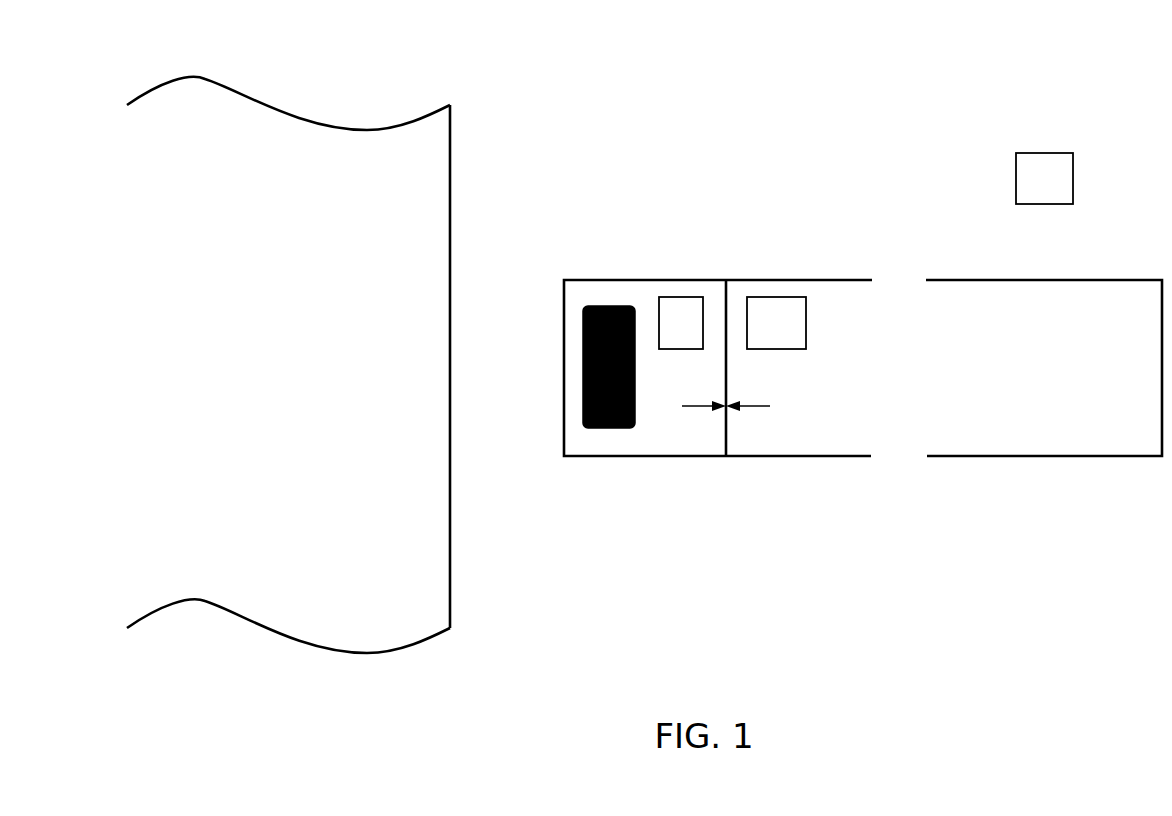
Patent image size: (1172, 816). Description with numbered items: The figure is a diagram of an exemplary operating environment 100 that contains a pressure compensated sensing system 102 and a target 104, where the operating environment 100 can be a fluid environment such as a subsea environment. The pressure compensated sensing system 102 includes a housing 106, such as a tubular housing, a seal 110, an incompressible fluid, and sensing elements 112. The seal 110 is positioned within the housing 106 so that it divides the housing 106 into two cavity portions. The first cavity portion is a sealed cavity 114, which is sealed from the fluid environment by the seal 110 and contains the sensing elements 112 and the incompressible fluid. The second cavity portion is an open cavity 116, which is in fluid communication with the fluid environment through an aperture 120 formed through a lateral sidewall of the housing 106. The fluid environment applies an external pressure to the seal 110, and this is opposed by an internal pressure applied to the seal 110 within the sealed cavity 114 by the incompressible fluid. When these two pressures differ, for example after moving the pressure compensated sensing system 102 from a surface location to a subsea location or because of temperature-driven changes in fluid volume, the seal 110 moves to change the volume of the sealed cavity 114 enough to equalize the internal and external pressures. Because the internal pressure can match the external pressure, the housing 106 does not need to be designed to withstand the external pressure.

The operating environment 100 is at (533, 72).
The pressure compensated sensing system 102 is at (850, 192).
The target 104 is at (296, 357).
The housing 106 is at (1108, 457).
The seal 110 is at (728, 302).
The sensing elements 112 is at (612, 306).
The sealed cavity 114 is at (673, 457).
The open cavity 116 is at (1024, 378).
The aperture 120 is at (901, 281).